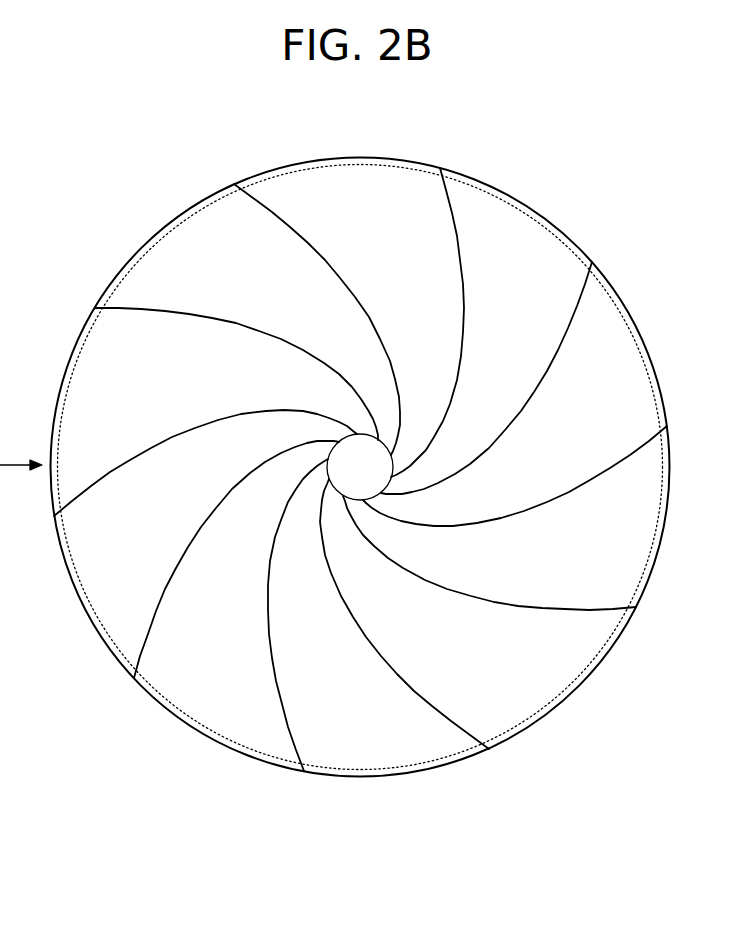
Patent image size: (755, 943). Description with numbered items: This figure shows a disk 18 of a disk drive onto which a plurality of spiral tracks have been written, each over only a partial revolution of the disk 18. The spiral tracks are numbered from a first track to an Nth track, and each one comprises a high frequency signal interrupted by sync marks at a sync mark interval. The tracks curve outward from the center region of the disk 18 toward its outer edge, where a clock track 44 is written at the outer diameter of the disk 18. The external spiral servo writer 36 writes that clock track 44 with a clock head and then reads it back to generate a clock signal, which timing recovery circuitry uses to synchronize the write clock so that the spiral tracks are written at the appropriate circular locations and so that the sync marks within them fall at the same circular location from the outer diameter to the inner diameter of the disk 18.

The disk 18 is at (553, 218).
The clock track 44 is at (650, 553).
The external spiral servo writer 36 is at (21, 315).